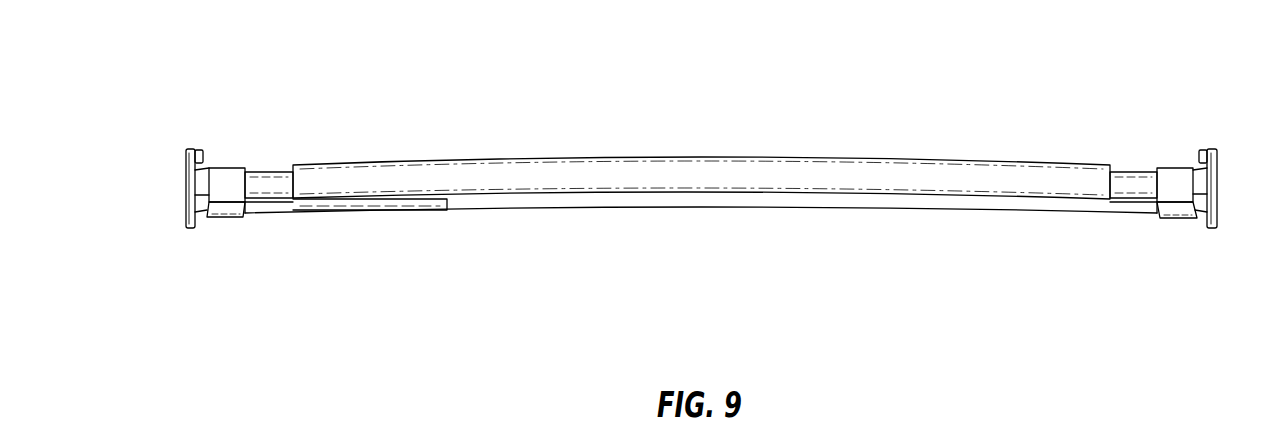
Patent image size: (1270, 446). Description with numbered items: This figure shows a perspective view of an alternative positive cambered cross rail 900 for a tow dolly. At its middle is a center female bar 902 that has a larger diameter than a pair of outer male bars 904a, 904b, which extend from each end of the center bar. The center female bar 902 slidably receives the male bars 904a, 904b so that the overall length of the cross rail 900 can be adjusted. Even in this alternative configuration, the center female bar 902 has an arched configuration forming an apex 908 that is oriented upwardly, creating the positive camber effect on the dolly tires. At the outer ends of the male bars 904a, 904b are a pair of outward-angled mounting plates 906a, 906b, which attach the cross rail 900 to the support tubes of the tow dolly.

The positive cambered cross rail 900 is at (168, 50).
The center female bar 902 is at (624, 202).
The outer male bar 904a is at (277, 173).
The outer male bar 904b is at (1137, 172).
The outward-angled mounting plate 906a is at (192, 228).
The outward-angled mounting plate 906b is at (1212, 228).
The apex 908 is at (702, 157).